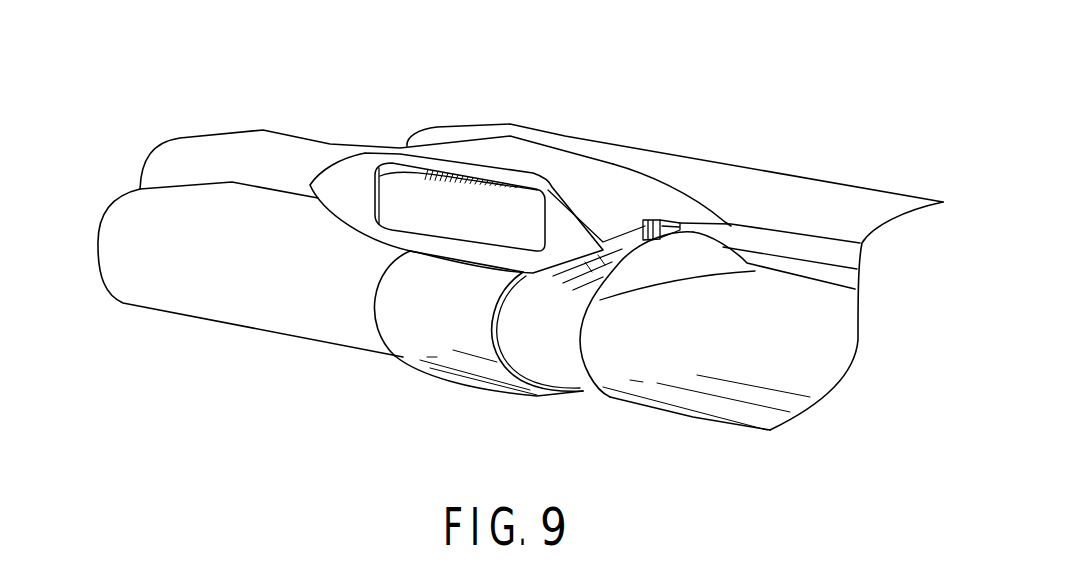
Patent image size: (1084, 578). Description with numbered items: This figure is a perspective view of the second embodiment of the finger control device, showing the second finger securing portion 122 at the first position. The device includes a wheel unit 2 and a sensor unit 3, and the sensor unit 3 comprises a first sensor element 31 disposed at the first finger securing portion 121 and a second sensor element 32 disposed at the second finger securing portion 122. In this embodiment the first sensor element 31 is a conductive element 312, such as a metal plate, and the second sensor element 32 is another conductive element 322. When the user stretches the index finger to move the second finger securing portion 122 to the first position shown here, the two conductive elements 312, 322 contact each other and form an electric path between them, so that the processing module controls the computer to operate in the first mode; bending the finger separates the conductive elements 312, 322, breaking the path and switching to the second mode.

The wheel unit 2 is at (511, 132).
The sensor unit 3 is at (683, 135).
The first sensor element 31 is at (695, 207).
The conductive element 312 is at (587, 269).
The second sensor element 32 is at (614, 162).
The conductive element 322 is at (645, 226).
The first finger securing portion 121 is at (713, 360).
The second finger securing portion 122 is at (430, 327).